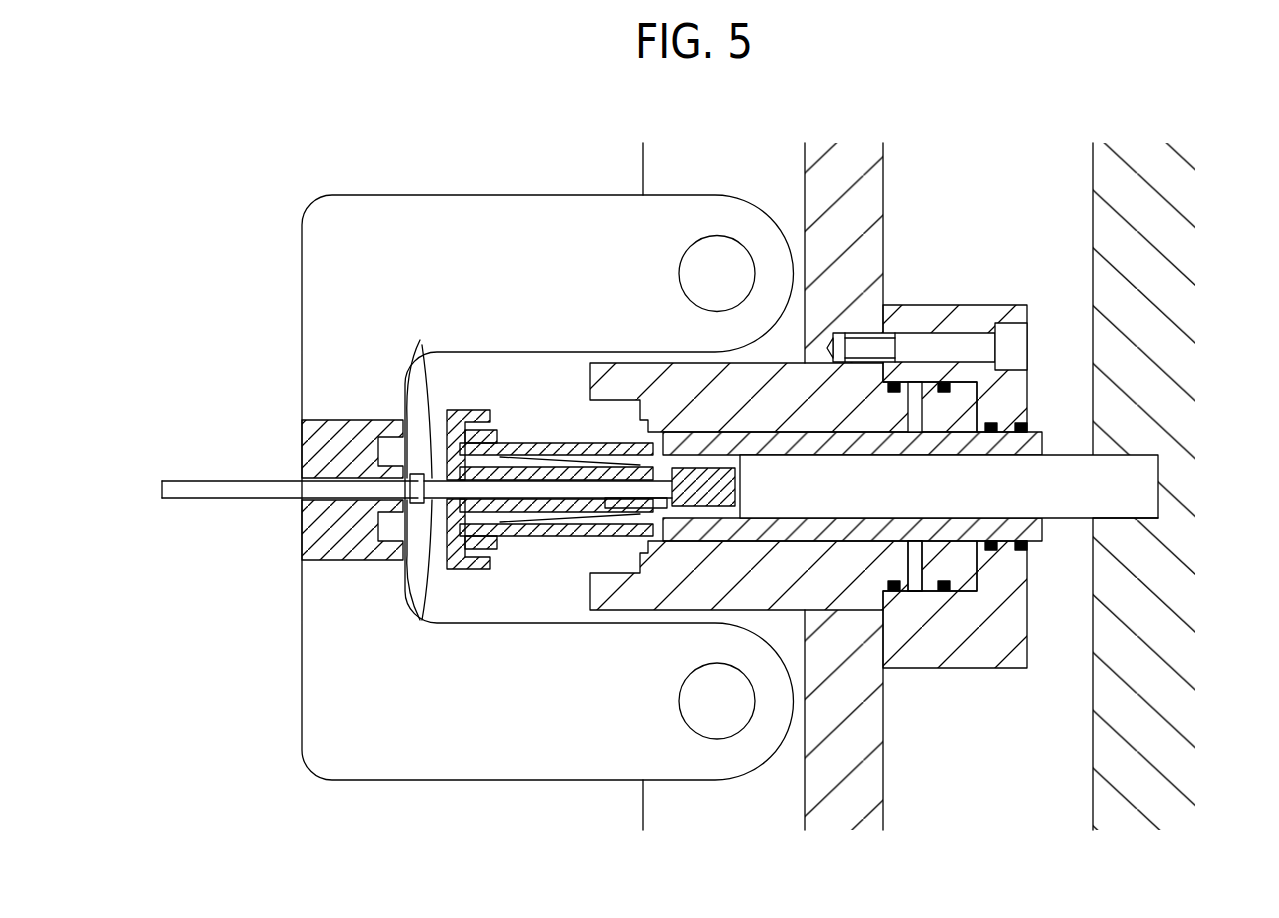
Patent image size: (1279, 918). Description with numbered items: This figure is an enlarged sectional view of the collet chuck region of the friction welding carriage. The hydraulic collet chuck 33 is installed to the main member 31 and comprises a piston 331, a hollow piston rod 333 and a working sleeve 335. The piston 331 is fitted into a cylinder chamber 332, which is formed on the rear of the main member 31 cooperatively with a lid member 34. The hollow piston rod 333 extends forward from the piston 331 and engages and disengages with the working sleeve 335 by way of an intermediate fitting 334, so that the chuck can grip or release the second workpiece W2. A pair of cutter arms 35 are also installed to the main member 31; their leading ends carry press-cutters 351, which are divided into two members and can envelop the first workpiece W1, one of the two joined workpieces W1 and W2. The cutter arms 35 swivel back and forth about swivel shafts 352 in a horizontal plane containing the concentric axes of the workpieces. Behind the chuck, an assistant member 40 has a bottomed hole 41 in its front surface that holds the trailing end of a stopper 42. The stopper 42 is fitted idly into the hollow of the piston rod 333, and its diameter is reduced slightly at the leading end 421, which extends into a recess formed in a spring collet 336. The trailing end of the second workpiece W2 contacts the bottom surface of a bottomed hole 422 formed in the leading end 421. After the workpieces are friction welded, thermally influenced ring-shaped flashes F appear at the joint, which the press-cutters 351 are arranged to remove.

The main member 31 is at (870, 195).
The hydraulic collet chuck 33 is at (614, 372).
The lid member 34 is at (967, 320).
The cutter arms 35 is at (528, 218).
The assistant member 40 is at (1108, 212).
The bottomed hole 41 is at (1108, 512).
The stopper 42 is at (1143, 480).
The piston 331 is at (963, 590).
The cylinder chamber 332 is at (915, 585).
The hollow piston rod 333 is at (867, 440).
The intermediate fitting 334 is at (605, 514).
The working sleeve 335 is at (573, 453).
The spring collet 336 is at (503, 440).
The press-cutters 351 is at (397, 448).
The swivel shafts 352 is at (708, 258).
The leading end 421 is at (688, 505).
The bottomed hole 422 is at (600, 515).
The ring-shaped flashes F is at (428, 390).
The first workpiece W1 is at (202, 488).
The second workpiece W2 is at (415, 555).